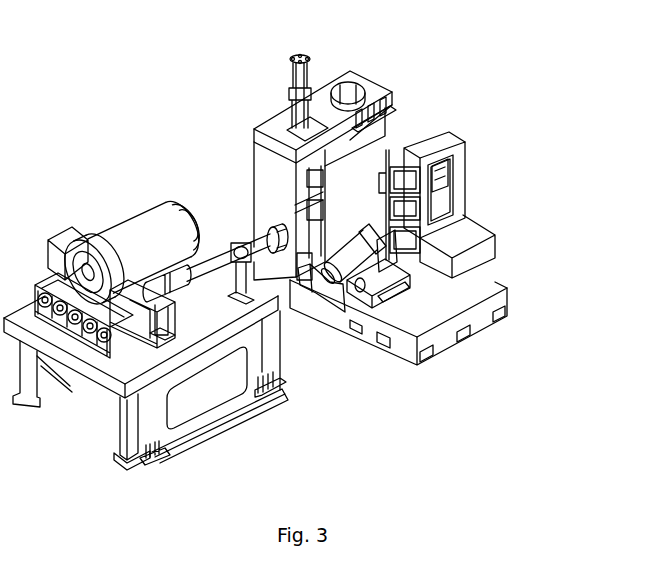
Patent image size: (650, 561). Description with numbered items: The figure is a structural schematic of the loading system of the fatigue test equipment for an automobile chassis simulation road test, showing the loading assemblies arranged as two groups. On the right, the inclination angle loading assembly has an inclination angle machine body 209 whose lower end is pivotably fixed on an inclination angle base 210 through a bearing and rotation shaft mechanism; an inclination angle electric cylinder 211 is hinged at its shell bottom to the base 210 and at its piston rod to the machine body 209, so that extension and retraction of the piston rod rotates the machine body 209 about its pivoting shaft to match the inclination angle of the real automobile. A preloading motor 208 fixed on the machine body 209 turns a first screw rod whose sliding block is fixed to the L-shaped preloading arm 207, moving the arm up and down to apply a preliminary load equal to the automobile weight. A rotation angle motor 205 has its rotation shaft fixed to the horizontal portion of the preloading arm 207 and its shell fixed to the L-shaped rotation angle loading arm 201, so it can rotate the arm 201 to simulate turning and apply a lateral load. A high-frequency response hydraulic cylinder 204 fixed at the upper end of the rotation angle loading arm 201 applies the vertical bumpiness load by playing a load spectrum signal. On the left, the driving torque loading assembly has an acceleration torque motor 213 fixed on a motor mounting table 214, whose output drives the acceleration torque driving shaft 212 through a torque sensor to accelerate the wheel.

The rotation angle loading arm 201 is at (276, 165).
The high-frequency response hydraulic cylinder 204 is at (306, 74).
The rotation angle motor 205 is at (354, 81).
The preloading arm 207 is at (393, 121).
The preloading motor 208 is at (434, 170).
The inclination angle machine body 209 is at (458, 235).
The inclination angle base 210 is at (441, 315).
The inclination angle electric cylinder 211 is at (375, 268).
The acceleration torque driving shaft 212 is at (245, 272).
The acceleration torque motor 213 is at (132, 238).
The motor mounting table 214 is at (198, 319).